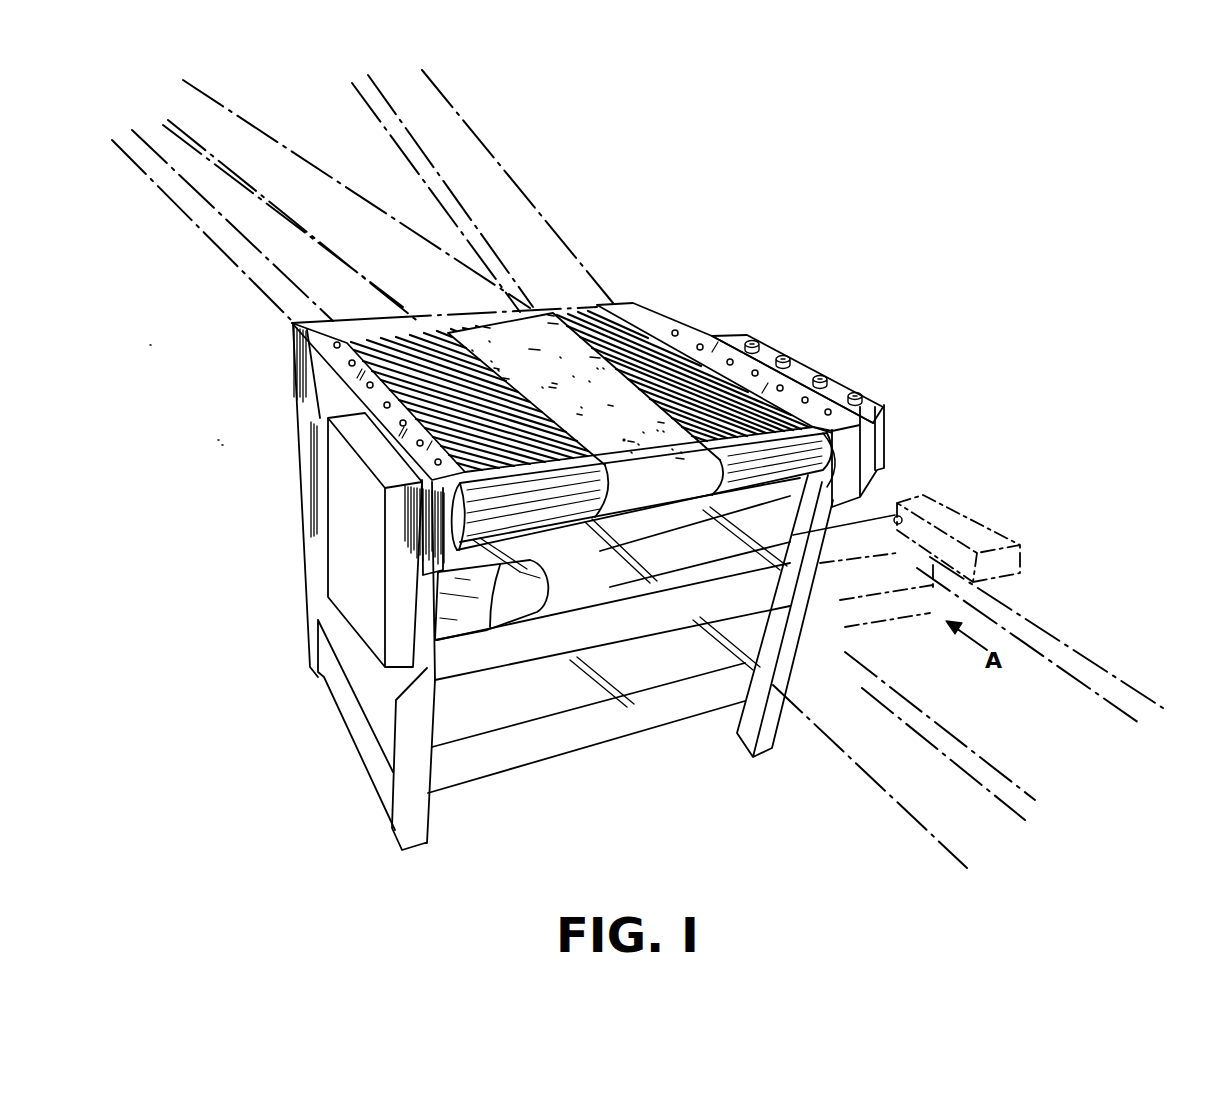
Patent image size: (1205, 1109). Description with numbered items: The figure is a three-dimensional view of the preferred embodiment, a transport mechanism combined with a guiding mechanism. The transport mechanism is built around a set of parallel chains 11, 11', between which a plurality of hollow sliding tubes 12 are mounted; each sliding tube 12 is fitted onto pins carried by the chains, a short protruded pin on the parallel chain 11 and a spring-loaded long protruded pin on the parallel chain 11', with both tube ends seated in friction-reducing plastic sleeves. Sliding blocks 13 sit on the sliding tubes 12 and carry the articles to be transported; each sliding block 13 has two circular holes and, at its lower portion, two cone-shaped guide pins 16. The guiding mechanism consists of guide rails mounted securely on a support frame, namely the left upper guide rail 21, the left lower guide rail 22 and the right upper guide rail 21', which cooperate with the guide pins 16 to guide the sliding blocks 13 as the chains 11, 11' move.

The parallel chain 11 is at (873, 456).
The parallel chain 11' is at (357, 529).
The hollow sliding tube 12 is at (830, 398).
The sliding block 13 is at (462, 333).
The cone-shaped guide pin 16 is at (518, 327).
The left upper guide rail 21 is at (378, 381).
The right upper guide rail 21' is at (735, 349).
The left lower guide rail 22 is at (562, 483).